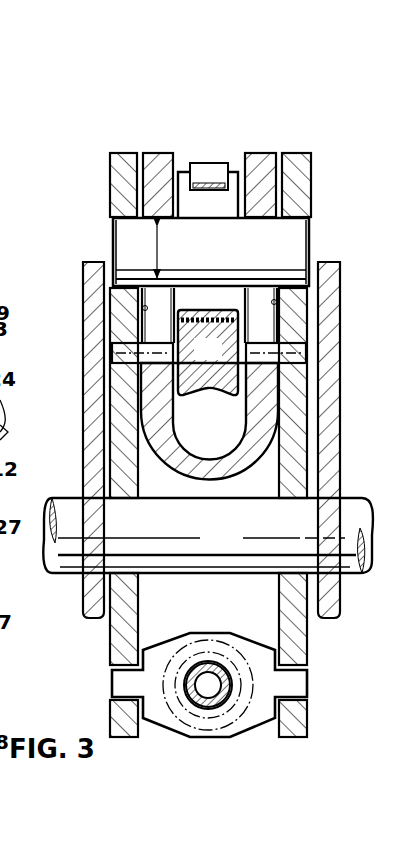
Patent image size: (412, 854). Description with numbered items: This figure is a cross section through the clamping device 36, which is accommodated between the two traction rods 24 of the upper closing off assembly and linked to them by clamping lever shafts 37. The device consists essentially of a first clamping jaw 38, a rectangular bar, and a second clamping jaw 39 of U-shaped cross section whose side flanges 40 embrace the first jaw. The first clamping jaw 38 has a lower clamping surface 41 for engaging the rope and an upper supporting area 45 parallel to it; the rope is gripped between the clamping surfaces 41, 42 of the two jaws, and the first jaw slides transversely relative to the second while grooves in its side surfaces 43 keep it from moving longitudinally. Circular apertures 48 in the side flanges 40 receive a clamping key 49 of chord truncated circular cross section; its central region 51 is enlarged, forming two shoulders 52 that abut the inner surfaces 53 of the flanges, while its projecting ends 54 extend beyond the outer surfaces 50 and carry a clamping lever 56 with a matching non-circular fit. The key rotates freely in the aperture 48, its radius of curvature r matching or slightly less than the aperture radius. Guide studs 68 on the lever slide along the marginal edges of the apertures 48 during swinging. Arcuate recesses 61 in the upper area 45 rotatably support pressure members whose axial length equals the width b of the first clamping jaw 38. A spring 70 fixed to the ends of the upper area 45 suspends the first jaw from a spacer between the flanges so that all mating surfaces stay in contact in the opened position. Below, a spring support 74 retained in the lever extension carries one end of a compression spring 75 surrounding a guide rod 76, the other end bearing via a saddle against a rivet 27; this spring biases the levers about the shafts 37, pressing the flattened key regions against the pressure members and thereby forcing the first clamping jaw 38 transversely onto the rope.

The clamping device 36 is at (319, 101).
The outer surfaces 50 is at (135, 185).
The side flanges 40 is at (155, 152).
The inner surfaces 53 is at (176, 152).
The spring 70 is at (210, 162).
The central regions 51 is at (200, 217).
The clamping key 49 is at (285, 240).
The projecting ends 54 is at (114, 244).
The shoulders 52 is at (250, 222).
The radius of curvature r is at (150, 260).
The width b is at (206, 312).
The upper supporting area 45 is at (229, 310).
The traction rods 24 is at (93, 422).
The clamping lever 56 is at (121, 452).
The guide studs 68 is at (122, 355).
The second clamping jaw 39 is at (281, 464).
The first clamping jaw 38 is at (196, 361).
The lower clamping surface 41 is at (205, 393).
The clamping surface 42 is at (213, 460).
The circular apertures 48 is at (142, 308).
The side surfaces 43 is at (178, 317).
The arcuate recesses 61 is at (112, 330).
The rivet 27 is at (208, 535).
The clamping lever shafts 37 is at (338, 565).
The spring support 74 is at (297, 682).
The compression spring 75 is at (232, 712).
The guide rod 76 is at (188, 703).